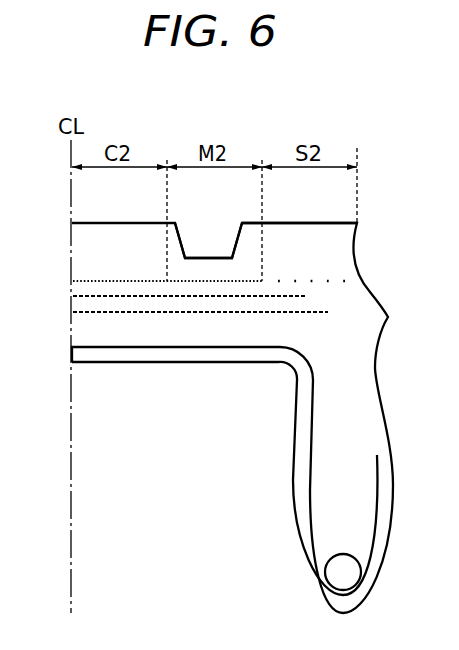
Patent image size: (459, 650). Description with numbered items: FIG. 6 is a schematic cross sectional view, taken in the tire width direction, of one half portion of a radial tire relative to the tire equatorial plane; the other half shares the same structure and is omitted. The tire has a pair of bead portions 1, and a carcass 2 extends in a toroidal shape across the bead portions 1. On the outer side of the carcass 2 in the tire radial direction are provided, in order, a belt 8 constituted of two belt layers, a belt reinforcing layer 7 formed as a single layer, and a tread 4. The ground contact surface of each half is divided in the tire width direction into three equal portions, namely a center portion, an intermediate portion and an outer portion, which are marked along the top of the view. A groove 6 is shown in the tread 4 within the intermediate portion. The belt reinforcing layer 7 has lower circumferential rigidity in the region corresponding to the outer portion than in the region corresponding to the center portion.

The bead portion 1 is at (391, 541).
The carcass 2 is at (313, 417).
The tread 4 is at (290, 222).
The groove 6 is at (209, 240).
The belt reinforcing layer 7 is at (53, 273).
The belt 8 is at (53, 292).